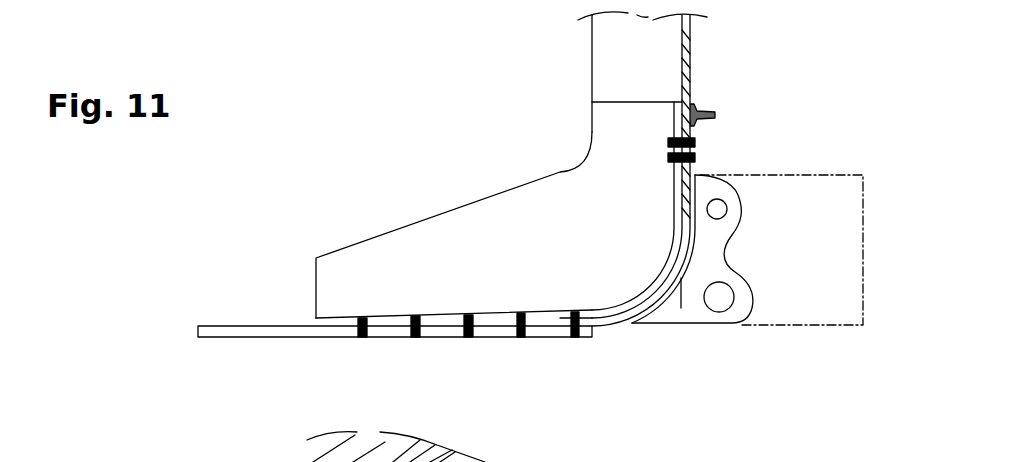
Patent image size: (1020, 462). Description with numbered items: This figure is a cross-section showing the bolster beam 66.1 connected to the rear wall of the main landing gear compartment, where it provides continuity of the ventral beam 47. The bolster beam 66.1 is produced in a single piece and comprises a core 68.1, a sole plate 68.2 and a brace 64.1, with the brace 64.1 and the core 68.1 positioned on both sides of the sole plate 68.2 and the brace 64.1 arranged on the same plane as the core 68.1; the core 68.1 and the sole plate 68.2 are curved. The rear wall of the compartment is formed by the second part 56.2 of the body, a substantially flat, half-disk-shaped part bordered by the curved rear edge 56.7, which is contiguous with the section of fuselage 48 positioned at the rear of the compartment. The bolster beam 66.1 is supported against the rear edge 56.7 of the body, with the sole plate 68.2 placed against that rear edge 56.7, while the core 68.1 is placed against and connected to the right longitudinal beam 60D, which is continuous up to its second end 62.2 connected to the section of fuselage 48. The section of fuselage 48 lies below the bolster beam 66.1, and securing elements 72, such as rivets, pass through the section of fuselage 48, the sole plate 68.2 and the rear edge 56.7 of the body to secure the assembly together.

The ventral beam 47 is at (835, 326).
The section of fuselage 48 is at (272, 322).
The second part 56.2 is at (693, 62).
The rear edge 56.7 is at (625, 323).
The right longitudinal beam 60D is at (620, 48).
The second end 62.2 is at (633, 80).
The brace 64.1 is at (705, 255).
The bolster beam 66.1 is at (454, 337).
The core 68.1 is at (428, 245).
The sole plate 68.2 is at (492, 318).
The securing elements 72 is at (695, 158).